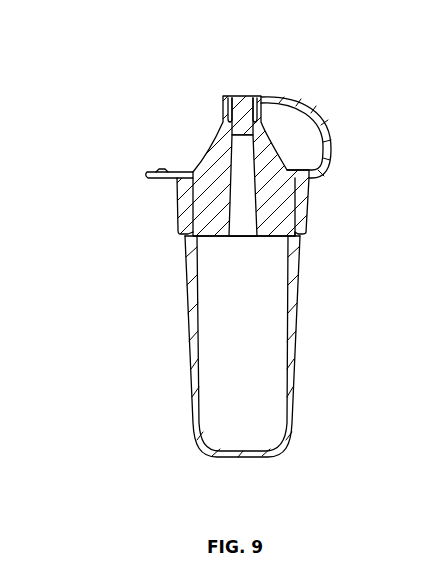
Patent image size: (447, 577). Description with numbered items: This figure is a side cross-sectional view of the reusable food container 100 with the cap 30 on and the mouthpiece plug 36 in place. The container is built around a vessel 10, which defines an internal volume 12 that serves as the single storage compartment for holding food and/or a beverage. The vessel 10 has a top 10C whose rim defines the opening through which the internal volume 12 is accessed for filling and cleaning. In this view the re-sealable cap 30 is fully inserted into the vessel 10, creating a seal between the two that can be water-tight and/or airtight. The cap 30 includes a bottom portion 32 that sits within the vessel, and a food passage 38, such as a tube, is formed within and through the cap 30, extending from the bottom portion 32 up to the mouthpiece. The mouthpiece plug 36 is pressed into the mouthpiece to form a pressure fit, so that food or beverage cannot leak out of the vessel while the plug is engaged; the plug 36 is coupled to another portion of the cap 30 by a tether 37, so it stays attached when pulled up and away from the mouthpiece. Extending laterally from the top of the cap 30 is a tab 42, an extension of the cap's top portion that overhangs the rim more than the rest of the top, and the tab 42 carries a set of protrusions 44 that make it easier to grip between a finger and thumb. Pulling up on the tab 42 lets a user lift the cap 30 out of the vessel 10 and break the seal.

The reusable food container 100 is at (106, 133).
The vessel 10 is at (133, 323).
The top 10C is at (183, 208).
The internal volume 12 is at (254, 438).
The cap 30 is at (341, 123).
The bottom portion 32 is at (275, 203).
The mouthpiece plug 36 is at (240, 103).
The tether 37 is at (332, 145).
The food passage 38 is at (251, 228).
The tab 42 is at (147, 178).
The protrusions 44 is at (162, 163).